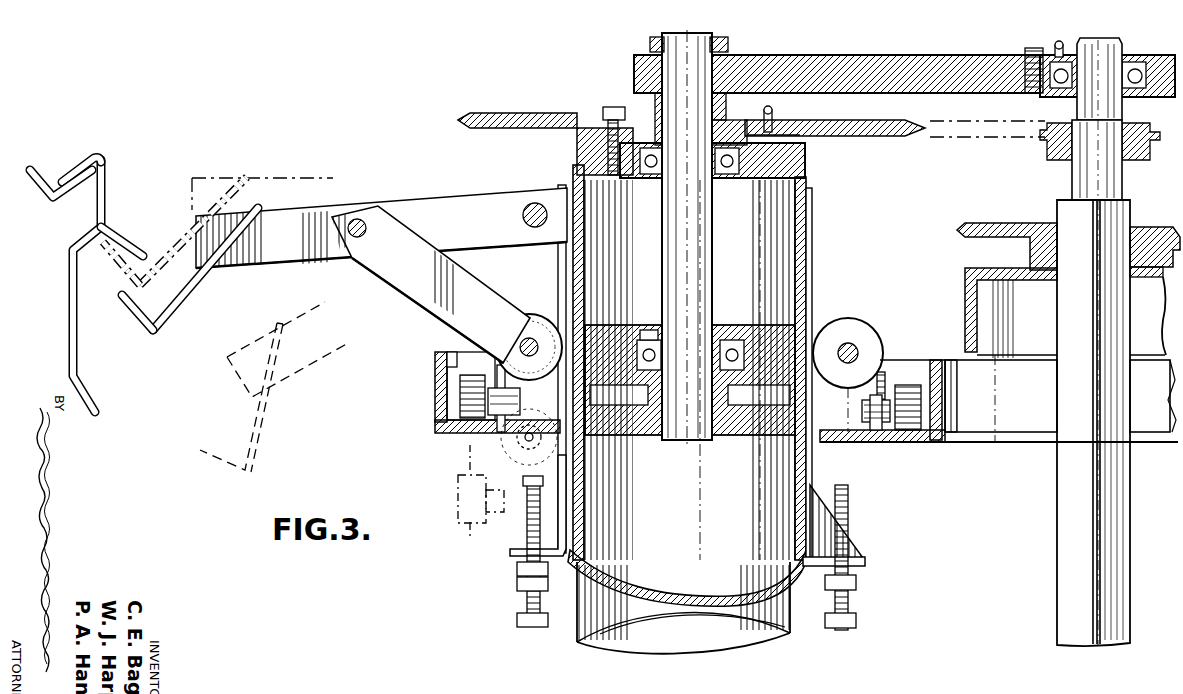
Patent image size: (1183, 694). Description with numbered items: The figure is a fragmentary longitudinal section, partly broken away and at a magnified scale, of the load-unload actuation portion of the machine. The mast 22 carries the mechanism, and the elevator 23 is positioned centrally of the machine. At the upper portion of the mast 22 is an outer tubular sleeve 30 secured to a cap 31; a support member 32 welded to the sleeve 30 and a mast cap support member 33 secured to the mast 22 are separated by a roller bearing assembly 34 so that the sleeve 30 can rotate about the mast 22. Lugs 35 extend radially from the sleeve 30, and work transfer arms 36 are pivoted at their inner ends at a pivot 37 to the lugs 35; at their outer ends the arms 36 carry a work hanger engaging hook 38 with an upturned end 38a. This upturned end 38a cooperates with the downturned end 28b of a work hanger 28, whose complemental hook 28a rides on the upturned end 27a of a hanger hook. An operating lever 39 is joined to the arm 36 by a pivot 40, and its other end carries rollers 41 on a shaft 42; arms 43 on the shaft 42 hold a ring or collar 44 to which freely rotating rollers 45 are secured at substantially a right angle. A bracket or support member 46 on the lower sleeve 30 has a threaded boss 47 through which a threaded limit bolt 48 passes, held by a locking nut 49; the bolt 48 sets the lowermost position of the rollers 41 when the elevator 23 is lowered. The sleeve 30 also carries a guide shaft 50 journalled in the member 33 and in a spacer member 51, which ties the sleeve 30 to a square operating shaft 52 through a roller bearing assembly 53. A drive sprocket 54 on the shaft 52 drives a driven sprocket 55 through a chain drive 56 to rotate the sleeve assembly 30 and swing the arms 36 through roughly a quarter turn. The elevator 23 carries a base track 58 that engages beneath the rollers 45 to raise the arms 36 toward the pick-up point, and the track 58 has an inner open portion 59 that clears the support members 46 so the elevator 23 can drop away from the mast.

The mast 22 is at (628, 640).
The elevator 23 is at (1000, 442).
The upturned end 27a is at (60, 205).
The work hanger 28 is at (90, 396).
The complemental hook 28a is at (77, 172).
The downturned end 28b is at (128, 245).
The outer tubular sleeve 30 is at (572, 562).
The cap 31 is at (800, 162).
The support member 32 is at (813, 320).
The mast cap support member 33 is at (695, 436).
The roller bearing assembly 34 is at (645, 380).
The lug 35 is at (553, 218).
The work transfer arm 36 is at (414, 200).
The pivot 37 is at (528, 208).
The work hanger engaging hook 38 is at (186, 300).
The upturned end 38a is at (142, 318).
The operating lever 39 is at (414, 290).
The pivot 40 is at (352, 246).
The roller 41 is at (520, 340).
The shaft 42 is at (520, 342).
The arm 43 is at (480, 355).
The ring or collar 44 is at (505, 432).
The roller 45 is at (470, 400).
The bracket or support member 46 is at (520, 556).
The threaded boss 47 is at (520, 570).
The threaded limit bolt 48 is at (523, 605).
The locking nut 49 is at (517, 586).
The guide shaft 50 is at (690, 262).
The spacer member 51 is at (852, 67).
The square operating shaft 52 is at (1060, 540).
The roller bearing assembly 53 is at (1130, 72).
The drive sprocket 54 is at (1048, 160).
The driven sprocket 55 is at (530, 120).
The chain drive 56 is at (954, 138).
The base track 58 is at (908, 432).
The inner open portion 59 is at (845, 435).